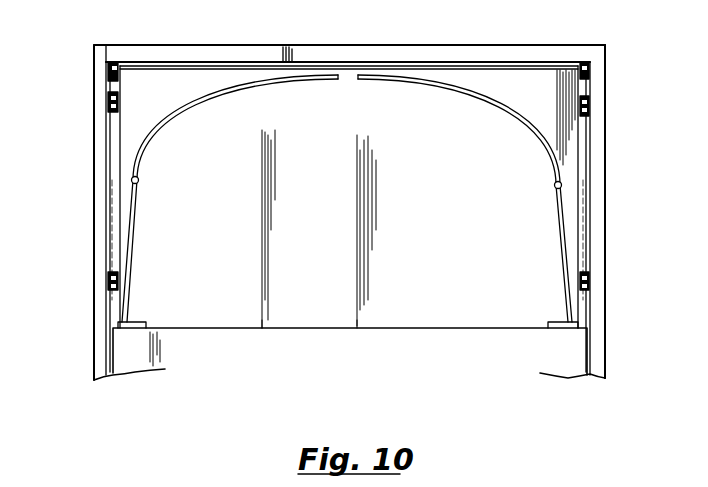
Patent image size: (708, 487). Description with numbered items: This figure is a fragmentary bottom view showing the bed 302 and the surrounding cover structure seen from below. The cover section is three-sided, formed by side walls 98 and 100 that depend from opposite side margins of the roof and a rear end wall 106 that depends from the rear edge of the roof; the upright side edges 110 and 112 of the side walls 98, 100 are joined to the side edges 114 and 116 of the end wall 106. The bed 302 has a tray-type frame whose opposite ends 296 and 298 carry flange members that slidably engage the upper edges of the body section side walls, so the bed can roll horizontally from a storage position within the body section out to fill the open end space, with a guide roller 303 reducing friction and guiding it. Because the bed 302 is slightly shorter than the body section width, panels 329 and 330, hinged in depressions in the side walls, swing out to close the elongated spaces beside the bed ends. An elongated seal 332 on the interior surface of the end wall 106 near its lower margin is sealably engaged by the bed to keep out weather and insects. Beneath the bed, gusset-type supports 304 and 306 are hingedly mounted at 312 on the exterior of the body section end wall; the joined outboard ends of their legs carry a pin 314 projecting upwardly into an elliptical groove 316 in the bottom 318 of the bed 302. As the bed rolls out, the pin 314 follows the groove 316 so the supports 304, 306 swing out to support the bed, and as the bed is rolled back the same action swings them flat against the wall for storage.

The side wall 98 is at (597, 150).
The side wall 100 is at (100, 147).
The rear end wall 106 is at (352, 58).
The upright side edge 110 is at (104, 60).
The upright side edge 112 is at (598, 62).
The side edge 114 is at (110, 48).
The side edge 116 is at (600, 47).
The end of frame 296 is at (108, 122).
The end of frame 298 is at (578, 130).
The forward bed 302 is at (319, 229).
The guide roller 303 is at (112, 64).
The gusset-type support 304 is at (131, 254).
The gusset-type support 306 is at (558, 244).
The hinge mounting 312 is at (126, 318).
The pin 314 is at (139, 180).
The elliptical groove 316 is at (205, 96).
The bottom of bed 318 is at (437, 330).
The panel 329 is at (583, 238).
The panel 330 is at (113, 223).
The elongated seal 332 is at (426, 62).